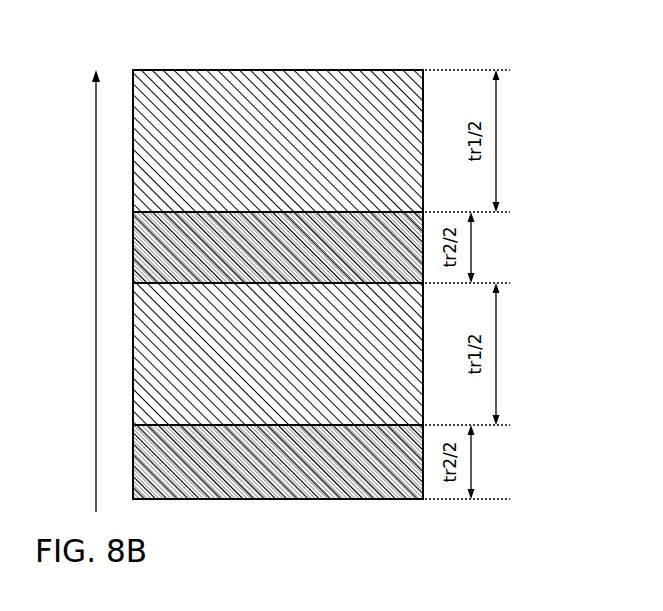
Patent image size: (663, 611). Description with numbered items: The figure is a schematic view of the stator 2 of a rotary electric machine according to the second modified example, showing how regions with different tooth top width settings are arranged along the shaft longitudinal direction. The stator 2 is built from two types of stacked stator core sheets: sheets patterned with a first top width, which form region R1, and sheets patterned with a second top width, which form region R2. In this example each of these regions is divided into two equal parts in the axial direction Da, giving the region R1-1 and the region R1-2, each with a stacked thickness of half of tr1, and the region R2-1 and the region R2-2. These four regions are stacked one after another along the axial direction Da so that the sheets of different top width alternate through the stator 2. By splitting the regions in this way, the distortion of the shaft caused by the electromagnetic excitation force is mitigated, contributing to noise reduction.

The stator 2 is at (285, 254).
The region R1-1 is at (278, 141).
The region R2-1 is at (278, 247).
The region R1-2 is at (278, 354).
The region R2-2 is at (278, 462).
The axial direction Da is at (82, 291).